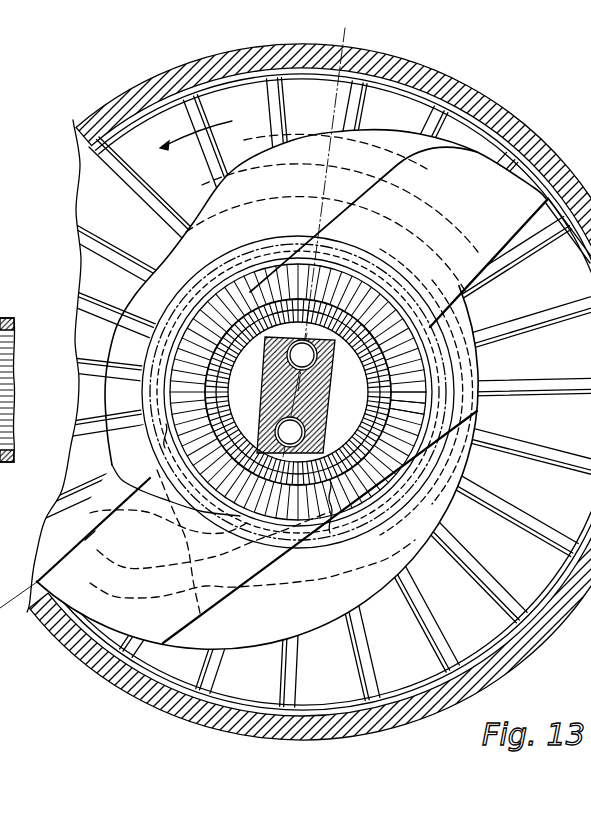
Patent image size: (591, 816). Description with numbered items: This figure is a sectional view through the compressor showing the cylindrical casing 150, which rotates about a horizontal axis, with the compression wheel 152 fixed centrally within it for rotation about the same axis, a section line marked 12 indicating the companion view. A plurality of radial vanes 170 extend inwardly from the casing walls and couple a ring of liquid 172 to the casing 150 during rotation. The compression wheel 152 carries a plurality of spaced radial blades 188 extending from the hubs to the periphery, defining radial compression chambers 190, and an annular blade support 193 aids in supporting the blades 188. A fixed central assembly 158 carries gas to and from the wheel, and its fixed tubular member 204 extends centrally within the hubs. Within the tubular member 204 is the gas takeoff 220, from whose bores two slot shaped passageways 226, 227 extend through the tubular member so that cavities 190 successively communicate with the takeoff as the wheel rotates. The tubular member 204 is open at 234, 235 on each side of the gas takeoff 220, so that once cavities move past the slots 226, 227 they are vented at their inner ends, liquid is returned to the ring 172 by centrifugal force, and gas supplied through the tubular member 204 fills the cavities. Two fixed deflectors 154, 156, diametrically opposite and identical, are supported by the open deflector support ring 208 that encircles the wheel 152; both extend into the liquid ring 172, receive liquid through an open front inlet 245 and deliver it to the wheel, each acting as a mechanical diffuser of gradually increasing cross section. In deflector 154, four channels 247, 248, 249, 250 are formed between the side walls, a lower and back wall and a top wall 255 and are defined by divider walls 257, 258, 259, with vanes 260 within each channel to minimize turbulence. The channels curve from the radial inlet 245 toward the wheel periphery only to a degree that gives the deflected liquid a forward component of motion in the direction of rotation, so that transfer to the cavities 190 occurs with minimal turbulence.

The section line 12- 12 is at (346, 5).
The cylindrical casing 150 is at (177, 722).
The compression wheel 152 is at (470, 307).
The deflector 154 is at (112, 640).
The deflector 156 is at (400, 164).
The fixed central assembly 158 is at (0, 473).
The radial vanes 170 is at (543, 468).
The ring of liquid 172 is at (150, 400).
The radial blades 188 is at (432, 409).
The radial compression chambers 190 is at (444, 372).
The annular blade support 193 is at (472, 346).
The tubular member 204 is at (4, 316).
The deflector support ring 208 is at (463, 440).
The gas takeoff 220 is at (296, 395).
The slot shaped passageway 226 is at (330, 533).
The slot shaped passageway 227 is at (273, 262).
The open portion of tubular member 234 is at (332, 442).
The open portion of tubular member 235 is at (262, 345).
The front inlet 245 is at (37, 580).
The channel 247 is at (114, 463).
The channel 248 is at (105, 518).
The channel 249 is at (240, 588).
The channel 250 is at (223, 603).
The top wall 255 is at (165, 448).
The divider wall 257 is at (281, 553).
The divider wall 258 is at (262, 568).
The divider wall 259 is at (198, 613).
The vane 260 is at (85, 540).